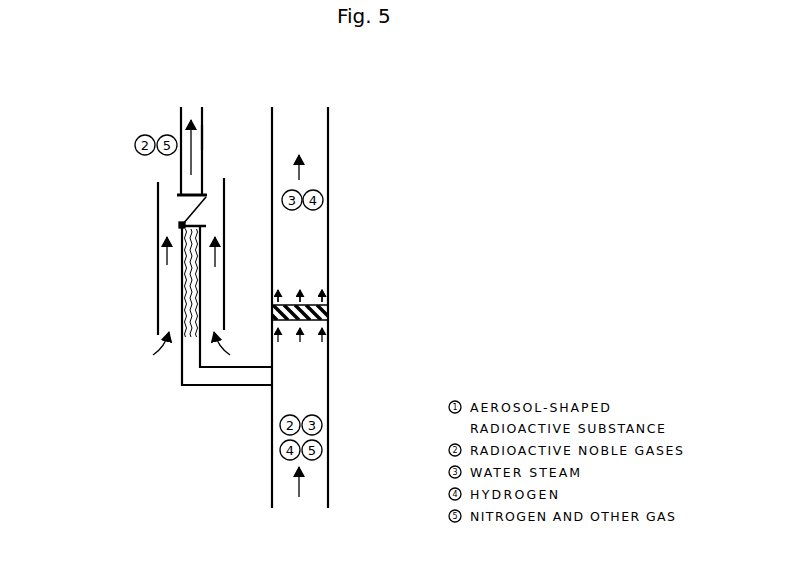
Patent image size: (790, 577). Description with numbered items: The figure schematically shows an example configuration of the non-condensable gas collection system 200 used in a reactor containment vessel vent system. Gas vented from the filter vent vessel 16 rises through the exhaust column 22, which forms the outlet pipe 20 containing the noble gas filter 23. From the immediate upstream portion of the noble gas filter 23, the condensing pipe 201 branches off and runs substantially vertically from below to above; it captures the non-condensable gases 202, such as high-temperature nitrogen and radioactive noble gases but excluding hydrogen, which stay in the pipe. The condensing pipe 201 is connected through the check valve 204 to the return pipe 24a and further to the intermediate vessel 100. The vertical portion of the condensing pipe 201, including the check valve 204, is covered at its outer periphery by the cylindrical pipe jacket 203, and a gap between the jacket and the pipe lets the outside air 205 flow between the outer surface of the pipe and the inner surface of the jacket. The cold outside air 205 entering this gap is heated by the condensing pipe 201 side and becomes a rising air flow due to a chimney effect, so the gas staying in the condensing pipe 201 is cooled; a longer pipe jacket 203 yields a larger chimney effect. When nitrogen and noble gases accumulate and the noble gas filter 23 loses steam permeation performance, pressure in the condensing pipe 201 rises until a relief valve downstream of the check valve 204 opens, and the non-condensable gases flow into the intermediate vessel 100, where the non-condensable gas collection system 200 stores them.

The non-condensable gas collection system 200 is at (110, 145).
The intermediate vessel 100 is at (192, 120).
The return pipe 24a is at (203, 137).
The exhaust column 22 is at (302, 277).
The outlet pipe 20 is at (329, 470).
The check valve 204 is at (179, 224).
The pipe jacket 203 is at (158, 265).
The non-condensable gases 202 is at (182, 305).
The outside air 205 is at (165, 360).
The condensing pipe 201 is at (230, 388).
The noble gas filter 23 is at (329, 307).
The filter vent vessel 16 is at (300, 533).